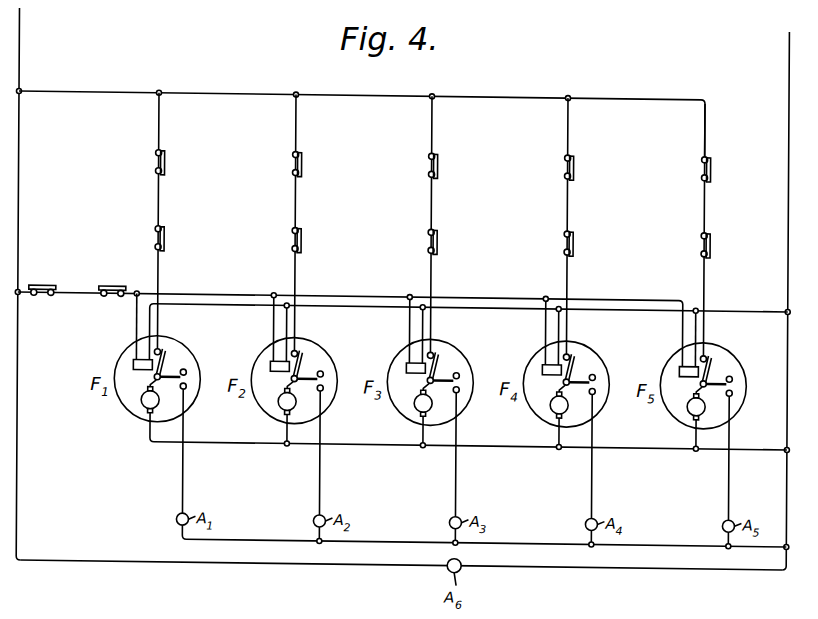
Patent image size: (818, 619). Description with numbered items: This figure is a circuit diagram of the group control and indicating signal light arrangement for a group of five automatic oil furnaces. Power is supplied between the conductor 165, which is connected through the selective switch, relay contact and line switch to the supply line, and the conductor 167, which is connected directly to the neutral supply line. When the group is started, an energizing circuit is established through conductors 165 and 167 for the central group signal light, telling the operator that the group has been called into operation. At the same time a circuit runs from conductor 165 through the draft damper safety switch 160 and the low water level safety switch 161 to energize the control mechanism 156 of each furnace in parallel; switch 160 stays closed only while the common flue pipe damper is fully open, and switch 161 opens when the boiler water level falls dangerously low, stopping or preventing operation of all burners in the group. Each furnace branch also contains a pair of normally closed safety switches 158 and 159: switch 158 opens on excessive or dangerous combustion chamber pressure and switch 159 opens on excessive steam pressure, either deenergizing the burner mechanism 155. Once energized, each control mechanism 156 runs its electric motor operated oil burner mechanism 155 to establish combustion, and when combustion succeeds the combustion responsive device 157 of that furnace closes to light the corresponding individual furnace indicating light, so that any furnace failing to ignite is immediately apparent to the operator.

The electric motor operated oil burner mechanism 155 is at (149, 402).
The control mechanism 156 is at (135, 360).
The combustion responsive device 157 is at (179, 368).
The safety switch 158 is at (166, 156).
The safety switch 159 is at (166, 236).
The draft damper safety switch 160 is at (40, 285).
The low water level safety switch 161 is at (114, 285).
The conductor 165 is at (19, 43).
The conductor 167 is at (789, 58).